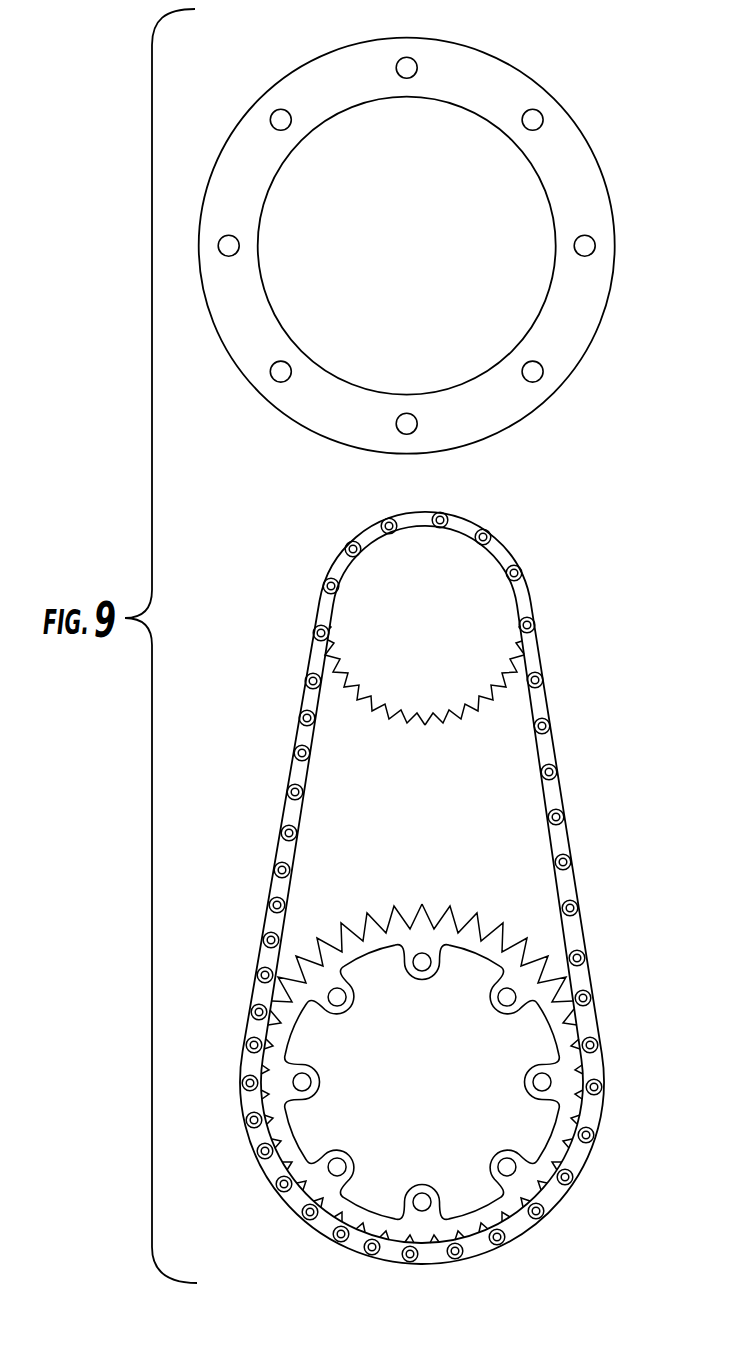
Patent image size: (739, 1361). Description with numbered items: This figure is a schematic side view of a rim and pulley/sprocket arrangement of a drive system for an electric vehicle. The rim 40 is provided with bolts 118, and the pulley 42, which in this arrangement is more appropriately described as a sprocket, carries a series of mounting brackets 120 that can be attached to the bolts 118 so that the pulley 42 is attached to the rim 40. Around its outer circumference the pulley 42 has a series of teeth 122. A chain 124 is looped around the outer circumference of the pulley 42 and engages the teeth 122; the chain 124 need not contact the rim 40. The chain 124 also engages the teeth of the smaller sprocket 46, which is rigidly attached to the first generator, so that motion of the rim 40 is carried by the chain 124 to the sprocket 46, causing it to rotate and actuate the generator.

The rim 40 is at (565, 147).
The bolts 118 is at (411, 62).
The pulley 42 is at (456, 1069).
The sprocket 46 is at (472, 618).
The mounting brackets 120 is at (513, 987).
The teeth 122 is at (395, 912).
The chain 124 is at (554, 767).